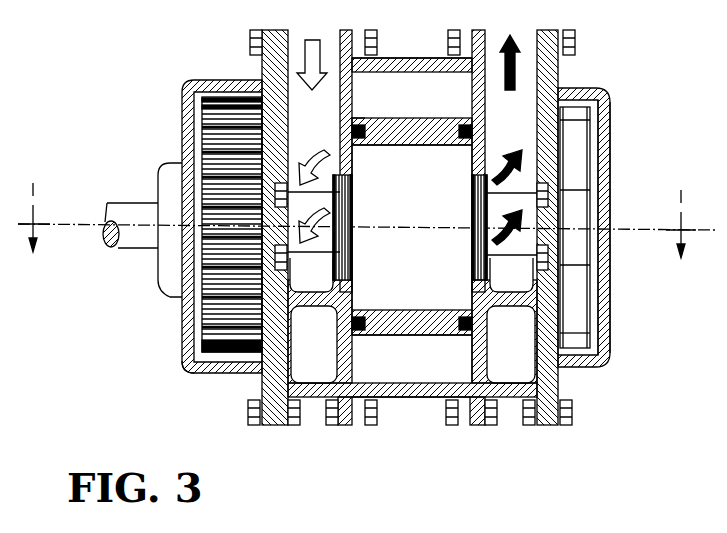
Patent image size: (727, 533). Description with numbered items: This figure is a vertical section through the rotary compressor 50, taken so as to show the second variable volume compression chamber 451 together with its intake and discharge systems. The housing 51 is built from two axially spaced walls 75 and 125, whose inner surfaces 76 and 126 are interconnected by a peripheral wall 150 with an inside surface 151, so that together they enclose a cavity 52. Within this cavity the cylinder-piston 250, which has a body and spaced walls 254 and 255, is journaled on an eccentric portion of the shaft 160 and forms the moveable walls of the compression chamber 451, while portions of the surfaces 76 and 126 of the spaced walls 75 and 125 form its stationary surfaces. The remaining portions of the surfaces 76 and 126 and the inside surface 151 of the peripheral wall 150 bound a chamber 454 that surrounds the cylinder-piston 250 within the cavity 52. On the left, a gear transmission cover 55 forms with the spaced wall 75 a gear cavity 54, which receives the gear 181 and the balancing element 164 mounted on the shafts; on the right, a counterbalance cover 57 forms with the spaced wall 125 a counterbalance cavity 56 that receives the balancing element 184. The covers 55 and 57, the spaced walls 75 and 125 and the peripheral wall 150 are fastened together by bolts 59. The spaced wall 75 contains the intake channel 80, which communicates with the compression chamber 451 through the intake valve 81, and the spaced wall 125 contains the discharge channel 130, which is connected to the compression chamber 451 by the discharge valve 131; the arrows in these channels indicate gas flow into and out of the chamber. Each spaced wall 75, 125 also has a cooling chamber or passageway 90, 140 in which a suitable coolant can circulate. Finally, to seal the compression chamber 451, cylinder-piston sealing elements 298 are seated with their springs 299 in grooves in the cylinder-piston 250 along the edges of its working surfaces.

The rotary compressor 50 is at (600, 84).
The housing 51 is at (193, 90).
The cavity 52 is at (420, 377).
The gear cavity 54 is at (222, 320).
The gear transmission cover 55 is at (183, 303).
The counterbalance cavity 56 is at (593, 155).
The counterbalance cover 57 is at (610, 188).
The bolts 59 is at (251, 40).
The spaced wall 75 is at (280, 62).
The surface 76 is at (362, 85).
The intake channel 80 is at (320, 126).
The intake valve 81 is at (350, 192).
The cooling chamber or passageway 90 is at (283, 352).
The spaced wall 125 is at (543, 66).
The surface 126 is at (472, 357).
The discharge channel 130 is at (522, 126).
The discharge valve 131 is at (472, 193).
The cooling chamber or passageway 140 is at (480, 318).
The peripheral wall 150 is at (420, 66).
The inside surface 151 is at (426, 397).
The shaft 160 is at (135, 211).
The balancing element 164 is at (580, 343).
The gear 181 is at (200, 374).
The balancing element 184 is at (577, 312).
The cylinder-piston 250 is at (426, 322).
The spaced wall 254 is at (421, 131).
The spaced wall 255 is at (402, 320).
The cylinder-piston sealing elements 298 is at (472, 136).
The springs 299 is at (383, 106).
The compression chamber 451 is at (428, 237).
The chamber 454 is at (427, 104).